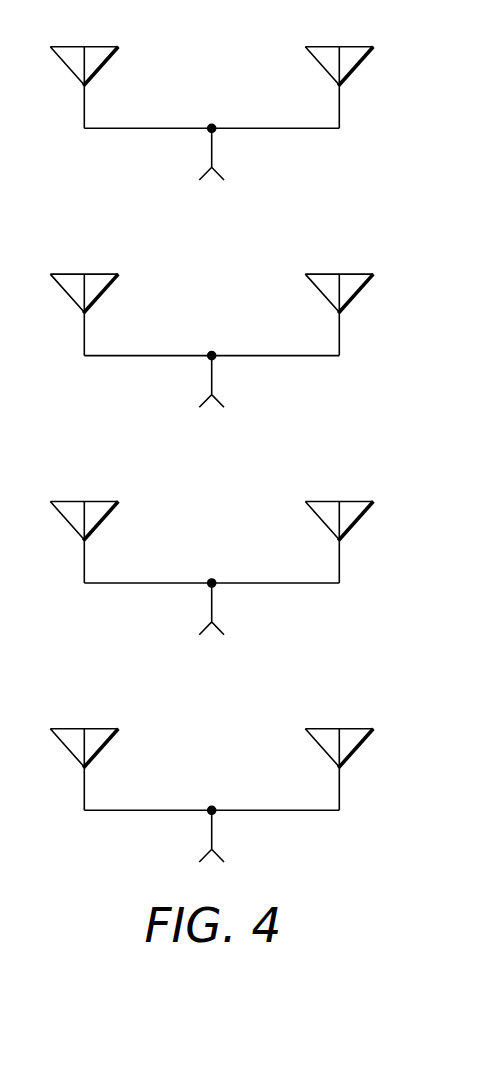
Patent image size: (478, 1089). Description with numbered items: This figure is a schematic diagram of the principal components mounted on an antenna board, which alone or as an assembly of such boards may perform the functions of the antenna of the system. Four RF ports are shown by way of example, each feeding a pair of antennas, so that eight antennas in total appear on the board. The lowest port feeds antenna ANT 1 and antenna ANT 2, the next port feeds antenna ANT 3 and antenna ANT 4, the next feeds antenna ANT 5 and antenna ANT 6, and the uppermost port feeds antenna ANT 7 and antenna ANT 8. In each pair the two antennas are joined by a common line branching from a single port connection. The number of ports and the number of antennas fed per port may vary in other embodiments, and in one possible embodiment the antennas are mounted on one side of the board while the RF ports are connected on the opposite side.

The antenna ANT 1 is at (84, 753).
The antenna ANT 2 is at (339, 753).
The antenna ANT 3 is at (84, 525).
The antenna ANT 4 is at (339, 525).
The antenna ANT 5 is at (84, 298).
The antenna ANT 6 is at (339, 298).
The antenna ANT 7 is at (84, 71).
The antenna ANT 8 is at (339, 71).